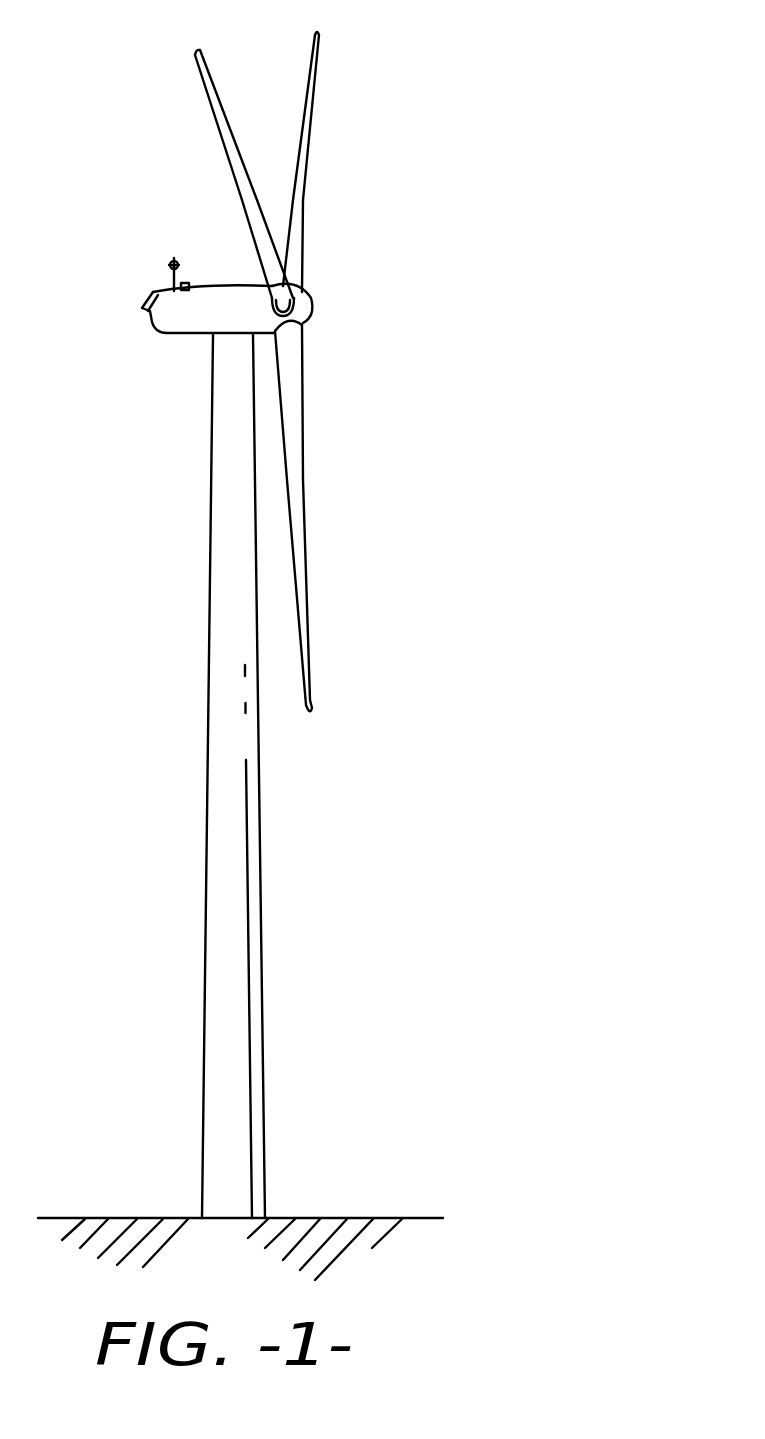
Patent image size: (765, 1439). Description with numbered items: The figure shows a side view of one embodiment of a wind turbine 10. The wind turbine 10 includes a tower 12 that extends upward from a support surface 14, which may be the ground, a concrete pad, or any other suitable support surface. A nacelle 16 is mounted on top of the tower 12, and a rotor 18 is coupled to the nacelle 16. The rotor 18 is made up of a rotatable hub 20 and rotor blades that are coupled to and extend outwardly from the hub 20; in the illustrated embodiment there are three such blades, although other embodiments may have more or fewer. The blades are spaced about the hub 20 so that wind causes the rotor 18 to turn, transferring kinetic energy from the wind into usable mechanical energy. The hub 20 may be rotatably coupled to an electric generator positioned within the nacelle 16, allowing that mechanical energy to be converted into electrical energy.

The wind turbine 10 is at (421, 116).
The tower 12 is at (218, 898).
The support surface 14 is at (123, 1218).
The nacelle 16 is at (188, 336).
The rotor 18 is at (318, 284).
The rotatable hub 20 is at (312, 315).